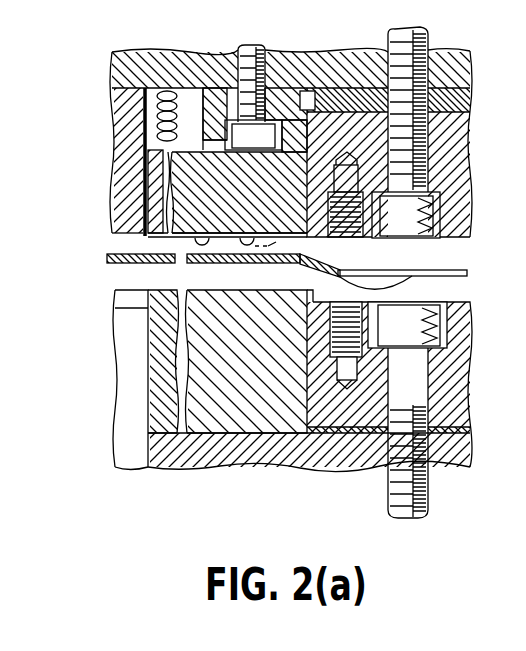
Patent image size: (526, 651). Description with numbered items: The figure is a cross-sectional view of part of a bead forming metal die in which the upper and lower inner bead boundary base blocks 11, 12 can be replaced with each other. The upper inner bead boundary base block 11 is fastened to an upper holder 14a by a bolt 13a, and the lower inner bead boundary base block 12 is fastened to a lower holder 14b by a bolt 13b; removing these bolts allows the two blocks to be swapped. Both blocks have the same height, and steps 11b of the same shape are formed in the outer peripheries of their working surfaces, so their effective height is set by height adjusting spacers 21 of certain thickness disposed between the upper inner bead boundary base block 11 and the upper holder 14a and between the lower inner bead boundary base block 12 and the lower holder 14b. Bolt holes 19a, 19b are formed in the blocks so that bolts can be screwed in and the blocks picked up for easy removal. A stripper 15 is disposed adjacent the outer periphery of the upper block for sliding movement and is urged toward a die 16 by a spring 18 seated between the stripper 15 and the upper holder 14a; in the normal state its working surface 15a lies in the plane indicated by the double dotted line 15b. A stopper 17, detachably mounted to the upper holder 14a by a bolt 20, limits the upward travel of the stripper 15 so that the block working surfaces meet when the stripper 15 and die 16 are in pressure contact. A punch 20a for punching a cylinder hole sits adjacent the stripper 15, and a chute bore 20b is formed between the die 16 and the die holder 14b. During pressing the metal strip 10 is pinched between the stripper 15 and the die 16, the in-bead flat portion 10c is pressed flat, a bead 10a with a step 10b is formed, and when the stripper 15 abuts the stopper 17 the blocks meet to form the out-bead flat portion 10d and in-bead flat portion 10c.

The metal strip 10 is at (125, 262).
The bead 10a is at (318, 258).
The step 10b is at (445, 268).
The in-bead flat portion 10c is at (384, 262).
The out-bead flat portion 10d is at (240, 262).
The upper inner bead boundary base block 11 is at (470, 198).
The step 11b is at (299, 87).
The lower inner bead boundary base block 12 is at (445, 375).
The bolt 13a is at (466, 228).
The bolt 13b is at (482, 312).
The upper holder 14a is at (445, 72).
The lower holder 14b is at (465, 443).
The stripper 15 is at (113, 168).
The working surface 15a is at (207, 233).
The double dotted line 15b is at (245, 238).
The die 16 is at (263, 458).
The stopper 17 is at (283, 74).
The spring 18 is at (160, 92).
The bolt hole 19a is at (365, 175).
The bolt hole 19b is at (325, 458).
The bolt 20 is at (238, 52).
The punch 20a is at (112, 200).
The chute bore 20b is at (117, 380).
The height adjusting spacer 21 is at (474, 98).